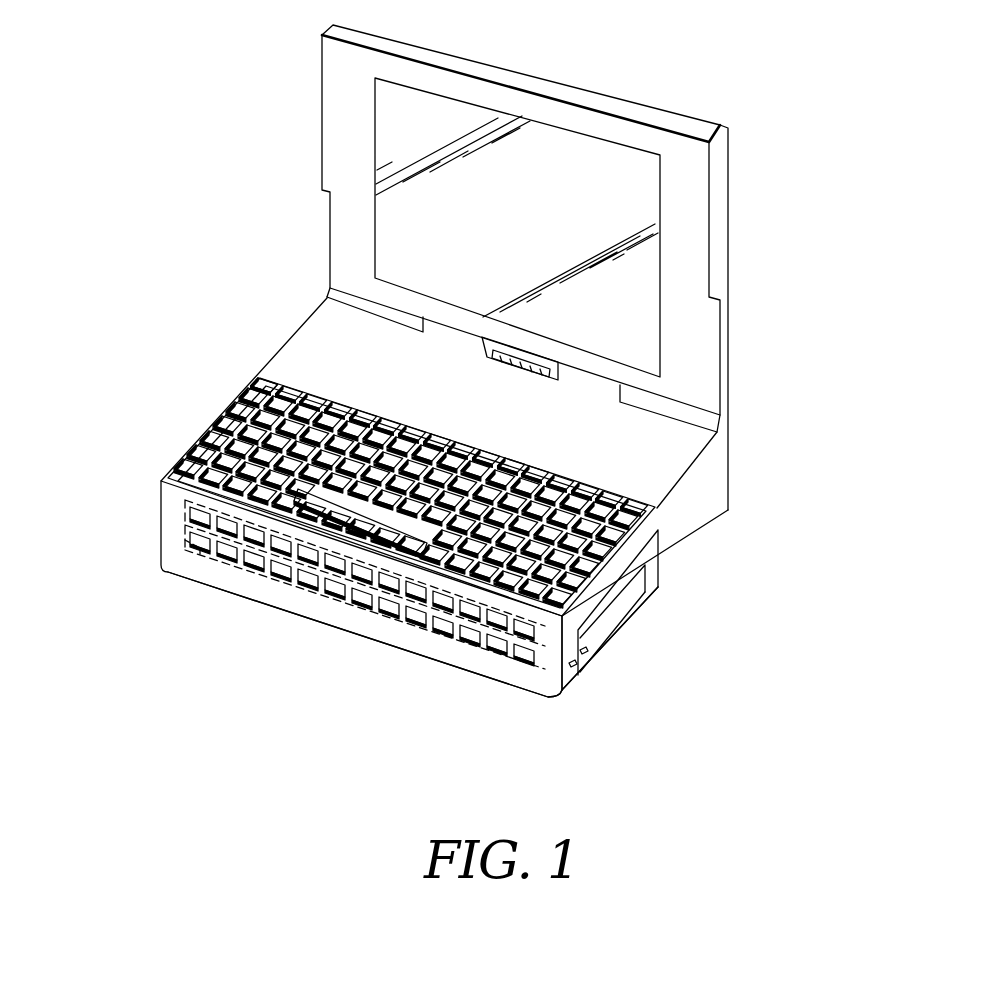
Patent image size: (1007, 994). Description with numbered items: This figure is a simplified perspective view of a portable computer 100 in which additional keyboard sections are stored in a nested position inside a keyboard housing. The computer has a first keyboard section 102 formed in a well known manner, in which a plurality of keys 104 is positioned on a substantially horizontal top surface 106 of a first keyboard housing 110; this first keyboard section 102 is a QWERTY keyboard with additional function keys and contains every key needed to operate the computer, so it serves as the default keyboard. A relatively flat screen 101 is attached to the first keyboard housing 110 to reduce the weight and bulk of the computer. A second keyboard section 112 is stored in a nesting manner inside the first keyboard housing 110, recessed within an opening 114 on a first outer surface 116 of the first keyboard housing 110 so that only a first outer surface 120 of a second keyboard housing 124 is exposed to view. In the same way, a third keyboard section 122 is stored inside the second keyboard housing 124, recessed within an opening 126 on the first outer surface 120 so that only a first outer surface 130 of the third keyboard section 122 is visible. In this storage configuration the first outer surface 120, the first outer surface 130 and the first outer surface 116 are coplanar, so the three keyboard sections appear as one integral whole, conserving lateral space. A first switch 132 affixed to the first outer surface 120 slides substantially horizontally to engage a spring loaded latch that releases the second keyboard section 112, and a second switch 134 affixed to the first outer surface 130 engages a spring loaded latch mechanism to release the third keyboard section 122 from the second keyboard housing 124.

The portable computer 100 is at (519, 410).
The screen 101 is at (645, 197).
The first keyboard section 102 is at (693, 460).
The keys 104 is at (411, 432).
The top surface 106 is at (260, 377).
The first keyboard housing 110 is at (455, 546).
The second keyboard section 112 is at (190, 504).
The opening 114 is at (650, 560).
The first outer surface 116 is at (548, 698).
The first outer surface 120 is at (658, 572).
The third keyboard section 122 is at (192, 570).
The second keyboard housing 124 is at (186, 549).
The opening 126 is at (592, 605).
The first outer surface 130 is at (636, 596).
The first switch 132 is at (572, 668).
The second switch 134 is at (584, 656).